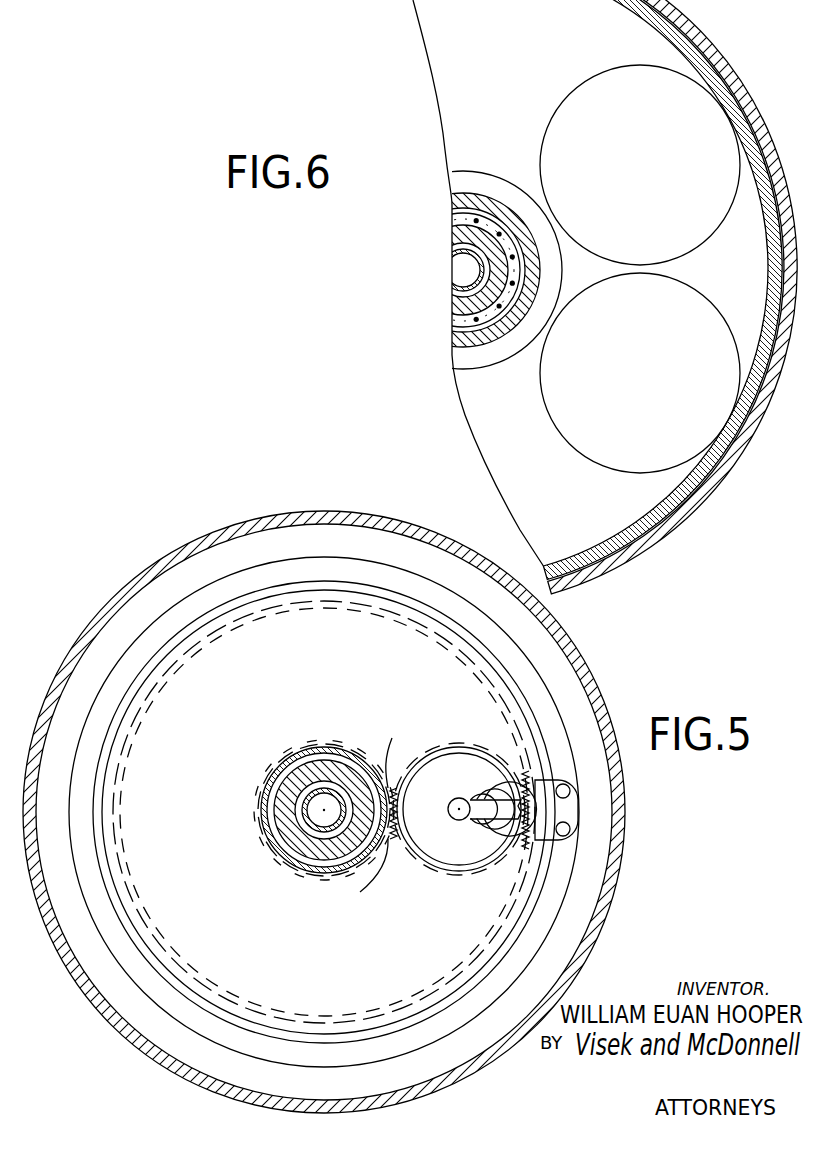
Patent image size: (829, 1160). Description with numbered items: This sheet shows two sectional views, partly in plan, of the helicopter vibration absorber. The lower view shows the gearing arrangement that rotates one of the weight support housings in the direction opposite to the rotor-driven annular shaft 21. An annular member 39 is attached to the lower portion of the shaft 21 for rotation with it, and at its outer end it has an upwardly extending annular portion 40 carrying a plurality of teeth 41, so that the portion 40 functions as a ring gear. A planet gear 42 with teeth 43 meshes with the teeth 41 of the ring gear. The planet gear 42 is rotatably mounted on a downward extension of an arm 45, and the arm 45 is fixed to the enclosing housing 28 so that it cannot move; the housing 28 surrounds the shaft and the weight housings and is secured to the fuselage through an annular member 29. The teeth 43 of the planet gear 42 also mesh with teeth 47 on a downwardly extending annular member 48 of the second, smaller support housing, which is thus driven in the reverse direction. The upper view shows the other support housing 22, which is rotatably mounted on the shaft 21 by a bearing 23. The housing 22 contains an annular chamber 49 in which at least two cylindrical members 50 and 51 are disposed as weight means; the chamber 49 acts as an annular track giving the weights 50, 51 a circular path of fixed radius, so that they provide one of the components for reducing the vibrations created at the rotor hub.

In FIG. 6, the annular shaft 21 is at (456, 305).
In FIG. 5, the annular shaft 21 is at (292, 787).
In FIG. 6, the support housing 22 is at (413, 0).
In FIG. 6, the bearing 23 is at (466, 206).
In FIG. 5, the housing 28 is at (284, 509).
In FIG. 6, the annular member 29 is at (458, 262).
In FIG. 5, the annular member 29 is at (322, 797).
In FIG. 5, the annular member 39 is at (214, 848).
In FIG. 5, the annular portion 40 is at (531, 836).
In FIG. 5, the teeth 41 is at (527, 777).
In FIG. 5, the planet gear 42 is at (445, 750).
In FIG. 5, the teeth 43 is at (393, 793).
In FIG. 5, the arm 45 is at (494, 812).
In FIG. 5, the teeth 47 is at (365, 831).
In FIG. 5, the annular member 48 is at (291, 862).
In FIG. 6, the annular chamber 49 is at (527, 64).
In FIG. 6, the cylindrical member 50 is at (665, 372).
In FIG. 6, the cylindrical member 51 is at (662, 175).